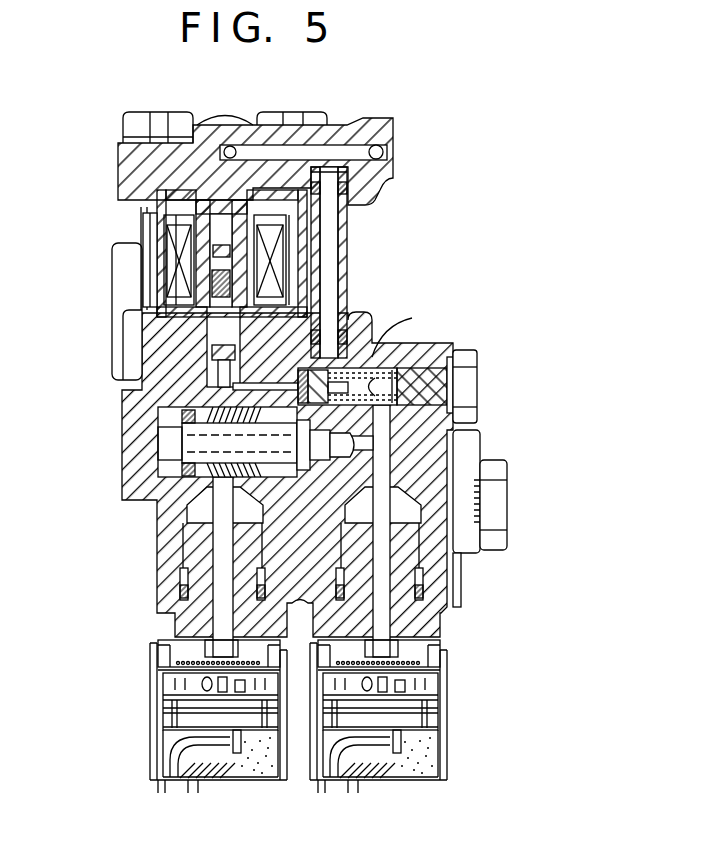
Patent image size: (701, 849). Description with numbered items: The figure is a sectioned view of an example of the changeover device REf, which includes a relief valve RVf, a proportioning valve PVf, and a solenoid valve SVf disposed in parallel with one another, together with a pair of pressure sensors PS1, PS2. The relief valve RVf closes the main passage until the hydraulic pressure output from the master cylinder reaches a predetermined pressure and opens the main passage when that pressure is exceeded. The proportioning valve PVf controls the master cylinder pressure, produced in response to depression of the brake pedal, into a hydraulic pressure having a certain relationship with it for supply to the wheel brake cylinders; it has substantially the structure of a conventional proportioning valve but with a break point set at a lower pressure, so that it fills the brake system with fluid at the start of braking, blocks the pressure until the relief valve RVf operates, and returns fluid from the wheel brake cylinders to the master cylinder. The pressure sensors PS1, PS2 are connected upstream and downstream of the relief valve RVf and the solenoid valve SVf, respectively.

The solenoid valve SVf is at (293, 257).
The relief valve RVf is at (357, 385).
The changeover device REf is at (490, 416).
The proportioning valve PVf is at (140, 464).
The pressure sensor PS2 is at (188, 645).
The pressure sensor PS1 is at (420, 647).